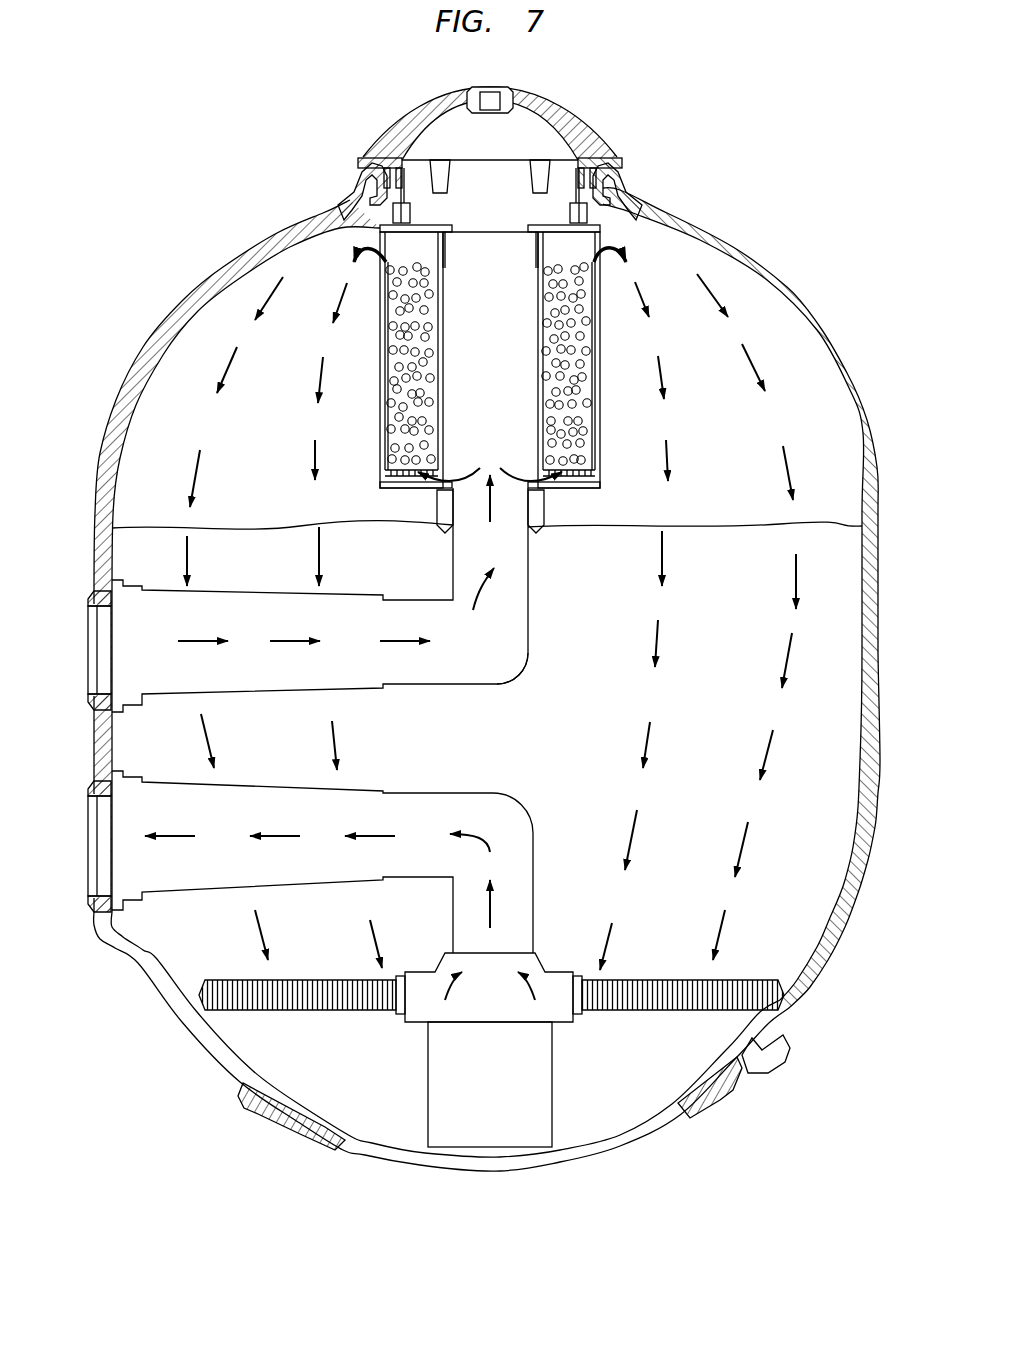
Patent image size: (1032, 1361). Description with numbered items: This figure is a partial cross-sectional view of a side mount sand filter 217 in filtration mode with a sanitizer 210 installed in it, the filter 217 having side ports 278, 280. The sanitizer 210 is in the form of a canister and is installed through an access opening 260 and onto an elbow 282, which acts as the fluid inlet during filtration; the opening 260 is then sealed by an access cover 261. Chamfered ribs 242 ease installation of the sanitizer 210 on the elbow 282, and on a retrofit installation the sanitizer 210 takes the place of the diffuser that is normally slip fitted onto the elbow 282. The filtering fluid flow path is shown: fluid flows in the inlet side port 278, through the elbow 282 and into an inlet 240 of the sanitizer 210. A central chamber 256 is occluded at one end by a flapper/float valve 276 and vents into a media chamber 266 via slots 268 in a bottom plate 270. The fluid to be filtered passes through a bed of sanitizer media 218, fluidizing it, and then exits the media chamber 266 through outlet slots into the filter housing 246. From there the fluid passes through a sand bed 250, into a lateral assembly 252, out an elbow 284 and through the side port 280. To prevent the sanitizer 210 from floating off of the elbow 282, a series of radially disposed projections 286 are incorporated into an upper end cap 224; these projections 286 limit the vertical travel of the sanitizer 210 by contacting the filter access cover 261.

The filter 217 is at (884, 628).
The filter housing 246 is at (793, 290).
The access cover 261 is at (422, 114).
The access opening 260 is at (358, 195).
The radially disposed projections 286 is at (605, 193).
The upper end cap 224 is at (379, 242).
The flapper/float valve 276 is at (486, 228).
The central chamber 256 is at (511, 320).
The sanitizer 210 is at (383, 357).
The sanitizer media 218 is at (388, 432).
The slots 268 is at (382, 487).
The media chamber 266 is at (592, 250).
The bottom plate 270 is at (410, 480).
The chamfered ribs 242 is at (540, 494).
The inlet 240 is at (503, 535).
The elbow 282 is at (533, 630).
The elbow 284 is at (534, 880).
The side port 278 is at (103, 667).
The side port 280 is at (103, 869).
The sand bed 250 is at (827, 868).
The lateral assembly 252 is at (663, 1010).